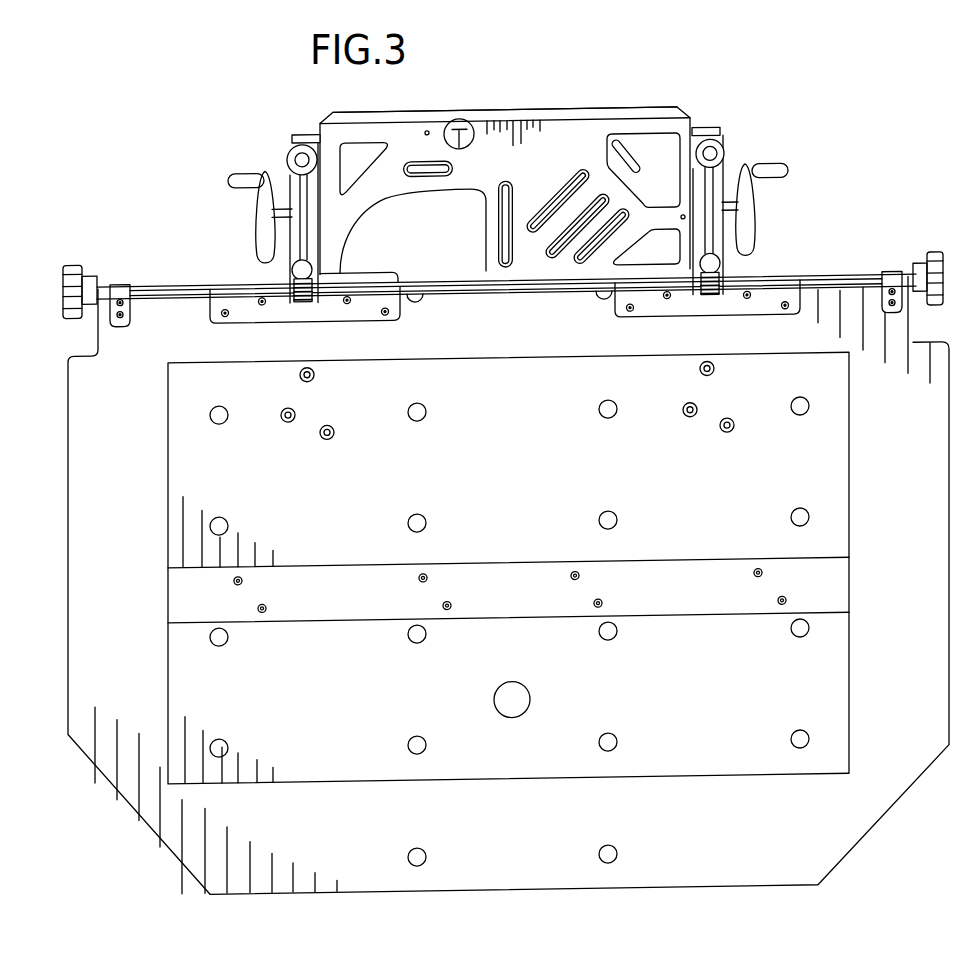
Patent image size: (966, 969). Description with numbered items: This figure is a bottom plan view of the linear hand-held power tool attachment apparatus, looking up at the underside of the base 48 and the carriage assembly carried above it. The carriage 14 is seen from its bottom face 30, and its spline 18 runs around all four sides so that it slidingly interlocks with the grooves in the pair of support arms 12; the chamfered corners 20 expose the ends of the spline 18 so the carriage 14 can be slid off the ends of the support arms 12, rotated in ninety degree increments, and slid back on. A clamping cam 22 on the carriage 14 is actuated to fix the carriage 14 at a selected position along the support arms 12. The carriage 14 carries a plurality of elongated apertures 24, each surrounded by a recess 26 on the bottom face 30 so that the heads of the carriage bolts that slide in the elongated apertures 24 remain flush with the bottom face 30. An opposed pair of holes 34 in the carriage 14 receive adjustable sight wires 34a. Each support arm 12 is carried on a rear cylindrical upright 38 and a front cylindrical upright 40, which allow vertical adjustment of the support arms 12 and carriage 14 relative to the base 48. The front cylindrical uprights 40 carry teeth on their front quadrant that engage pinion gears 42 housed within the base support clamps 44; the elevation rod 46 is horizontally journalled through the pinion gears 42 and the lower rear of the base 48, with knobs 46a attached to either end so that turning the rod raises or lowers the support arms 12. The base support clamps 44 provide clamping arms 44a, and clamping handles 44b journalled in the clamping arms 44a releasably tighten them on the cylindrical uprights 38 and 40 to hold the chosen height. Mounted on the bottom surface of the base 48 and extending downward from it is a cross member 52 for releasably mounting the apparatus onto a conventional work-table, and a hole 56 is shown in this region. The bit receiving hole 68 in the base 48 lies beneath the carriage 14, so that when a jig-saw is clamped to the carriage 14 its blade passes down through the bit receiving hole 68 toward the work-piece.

The support arms 12 is at (297, 128).
The carriage 14 is at (530, 119).
The spline 18 is at (595, 115).
The chamfered corners 20 is at (706, 131).
The clamping cam 22 is at (622, 146).
The elongated apertures 24 is at (501, 212).
The recesses 26 is at (508, 248).
The bottom face 30 is at (385, 199).
The holes 34 is at (446, 126).
The sight wires 34a is at (462, 124).
The rear cylindrical uprights 38 is at (289, 146).
The front cylindrical uprights 40 is at (720, 266).
The pinion gears 42 is at (313, 300).
The base support clamps 44 is at (290, 272).
The clamping arms 44a is at (290, 187).
The clamping handles 44b is at (270, 216).
The elevation rod 46 is at (517, 295).
The knobs 46a is at (67, 264).
The base 48 is at (914, 556).
The cross member 52 is at (318, 600).
The mounting hole 56 is at (222, 737).
The bit receiving hole 68 is at (515, 709).